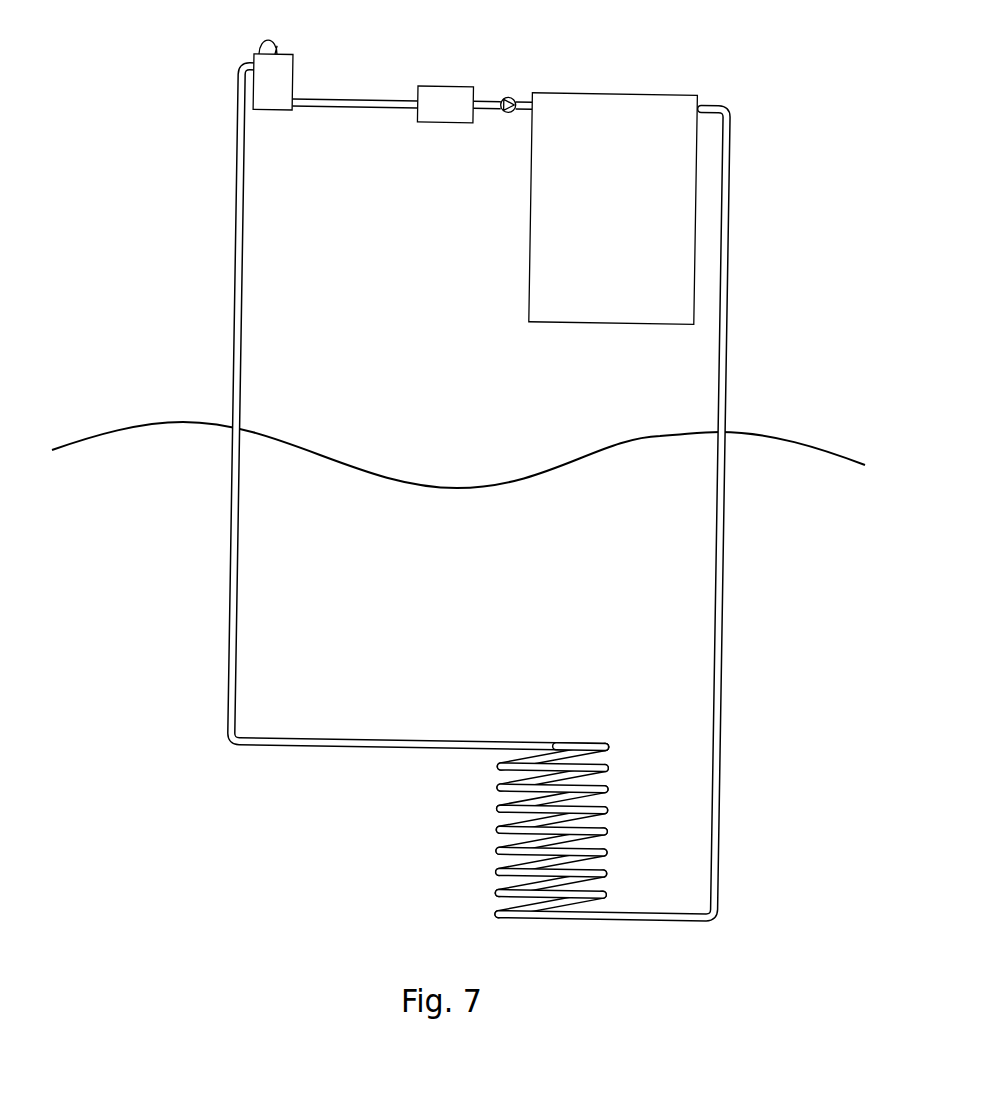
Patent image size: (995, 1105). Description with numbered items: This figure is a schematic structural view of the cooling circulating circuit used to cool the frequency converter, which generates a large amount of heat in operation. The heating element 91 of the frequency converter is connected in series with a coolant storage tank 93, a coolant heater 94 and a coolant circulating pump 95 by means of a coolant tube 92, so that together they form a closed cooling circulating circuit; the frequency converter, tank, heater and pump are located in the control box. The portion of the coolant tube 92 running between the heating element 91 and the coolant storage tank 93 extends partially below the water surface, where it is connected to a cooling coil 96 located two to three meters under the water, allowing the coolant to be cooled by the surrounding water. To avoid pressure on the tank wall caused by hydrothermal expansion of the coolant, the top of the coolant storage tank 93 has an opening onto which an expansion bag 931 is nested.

The heating element 91 is at (593, 305).
The coolant tube 92 is at (353, 103).
The coolant storage tank 93 is at (270, 100).
The expansion bag 931 is at (271, 47).
The coolant heater 94 is at (443, 115).
The coolant circulating pump 95 is at (508, 113).
The cooling coil 96 is at (608, 767).